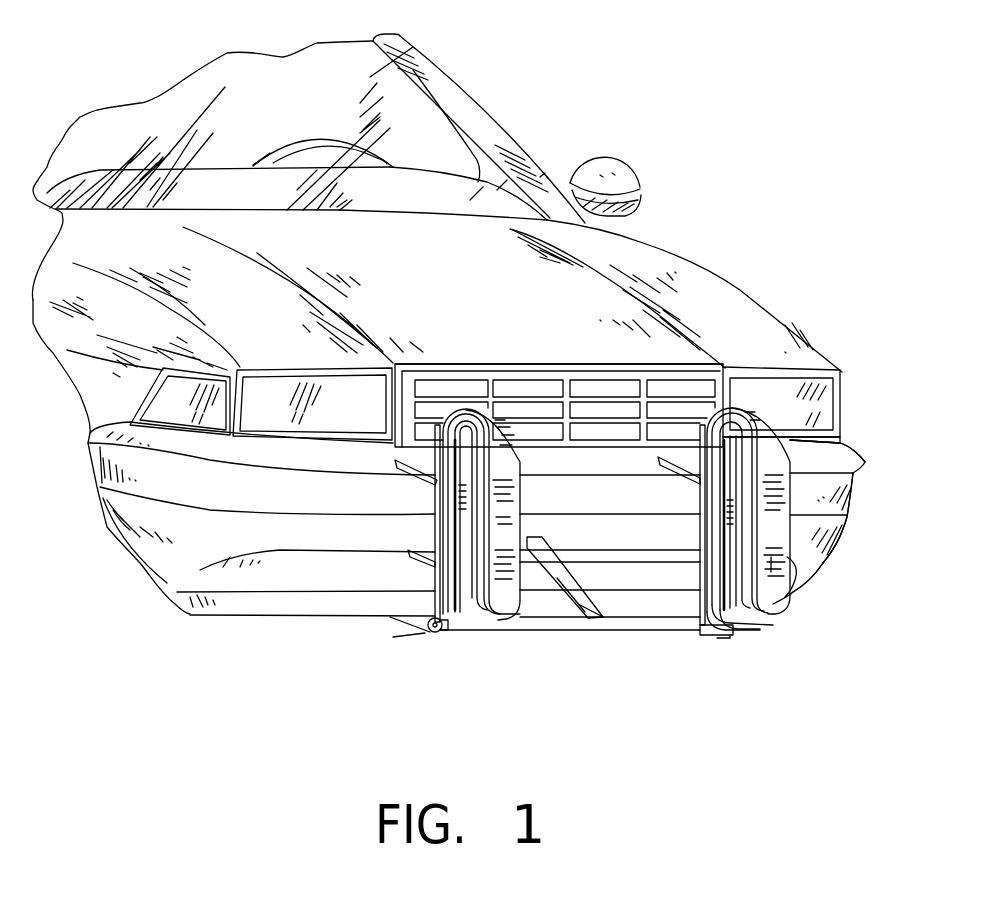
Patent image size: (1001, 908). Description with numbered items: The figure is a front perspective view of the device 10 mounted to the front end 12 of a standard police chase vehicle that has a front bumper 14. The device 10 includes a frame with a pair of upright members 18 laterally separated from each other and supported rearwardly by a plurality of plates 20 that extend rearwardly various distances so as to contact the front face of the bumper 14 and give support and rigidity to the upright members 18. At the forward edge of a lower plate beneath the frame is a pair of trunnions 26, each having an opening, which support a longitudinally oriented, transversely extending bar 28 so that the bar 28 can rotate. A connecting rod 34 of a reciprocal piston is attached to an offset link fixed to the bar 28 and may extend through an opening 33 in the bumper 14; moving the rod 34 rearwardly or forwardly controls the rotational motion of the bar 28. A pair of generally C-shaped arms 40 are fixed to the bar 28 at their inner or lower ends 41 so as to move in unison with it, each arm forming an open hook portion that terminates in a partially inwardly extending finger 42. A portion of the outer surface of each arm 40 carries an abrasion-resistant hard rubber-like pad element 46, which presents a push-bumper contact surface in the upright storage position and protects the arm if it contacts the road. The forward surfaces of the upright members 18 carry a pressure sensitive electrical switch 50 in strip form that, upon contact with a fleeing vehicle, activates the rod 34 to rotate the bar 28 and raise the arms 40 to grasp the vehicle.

The device 10 is at (797, 456).
The front end 12 is at (862, 499).
The front bumper 14 is at (842, 548).
The upright members 18 is at (452, 523).
The plates 20 is at (427, 472).
The trunnions 26 is at (417, 630).
The bar 28 is at (532, 632).
The opening 33 is at (543, 536).
The connecting rod 34 is at (558, 582).
The arms 40 is at (757, 440).
The inner or lower ends 41 is at (460, 634).
The finger 42 is at (727, 368).
The pad element 46 is at (797, 587).
The pressure sensitive electrical switch 50 is at (725, 594).